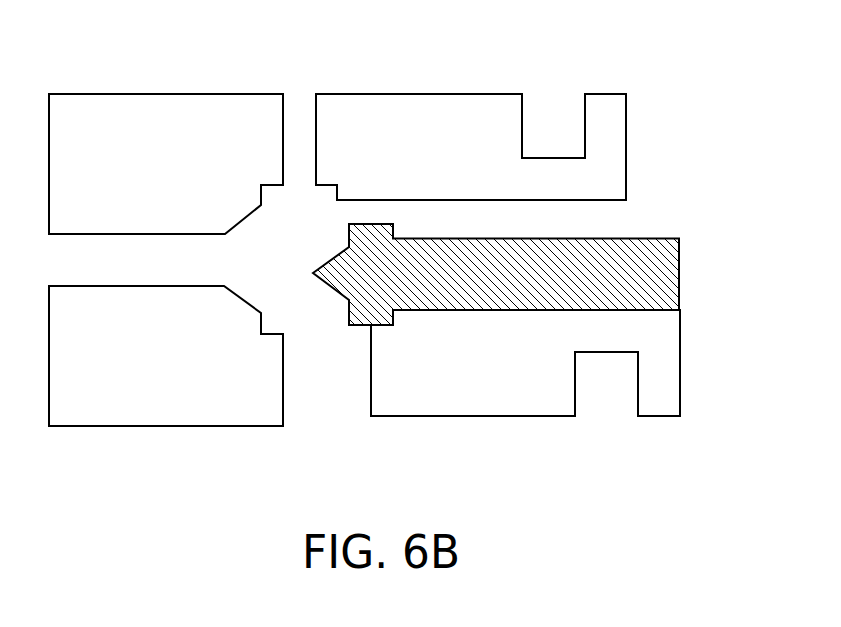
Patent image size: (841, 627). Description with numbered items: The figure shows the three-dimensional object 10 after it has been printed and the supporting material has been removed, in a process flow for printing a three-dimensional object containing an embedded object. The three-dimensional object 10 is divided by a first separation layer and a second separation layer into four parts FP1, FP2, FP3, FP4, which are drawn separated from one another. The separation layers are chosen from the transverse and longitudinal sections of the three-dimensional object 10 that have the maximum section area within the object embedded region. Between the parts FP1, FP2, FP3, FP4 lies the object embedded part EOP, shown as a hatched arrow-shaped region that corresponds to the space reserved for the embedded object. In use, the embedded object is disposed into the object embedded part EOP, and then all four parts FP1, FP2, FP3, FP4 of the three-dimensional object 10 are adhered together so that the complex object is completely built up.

The 3D object 10 is at (740, 489).
The first part FP1 is at (142, 115).
The second part FP2 is at (141, 405).
The third part FP3 is at (437, 120).
The fourth part FP4 is at (667, 370).
The object embedded part EOP is at (634, 262).